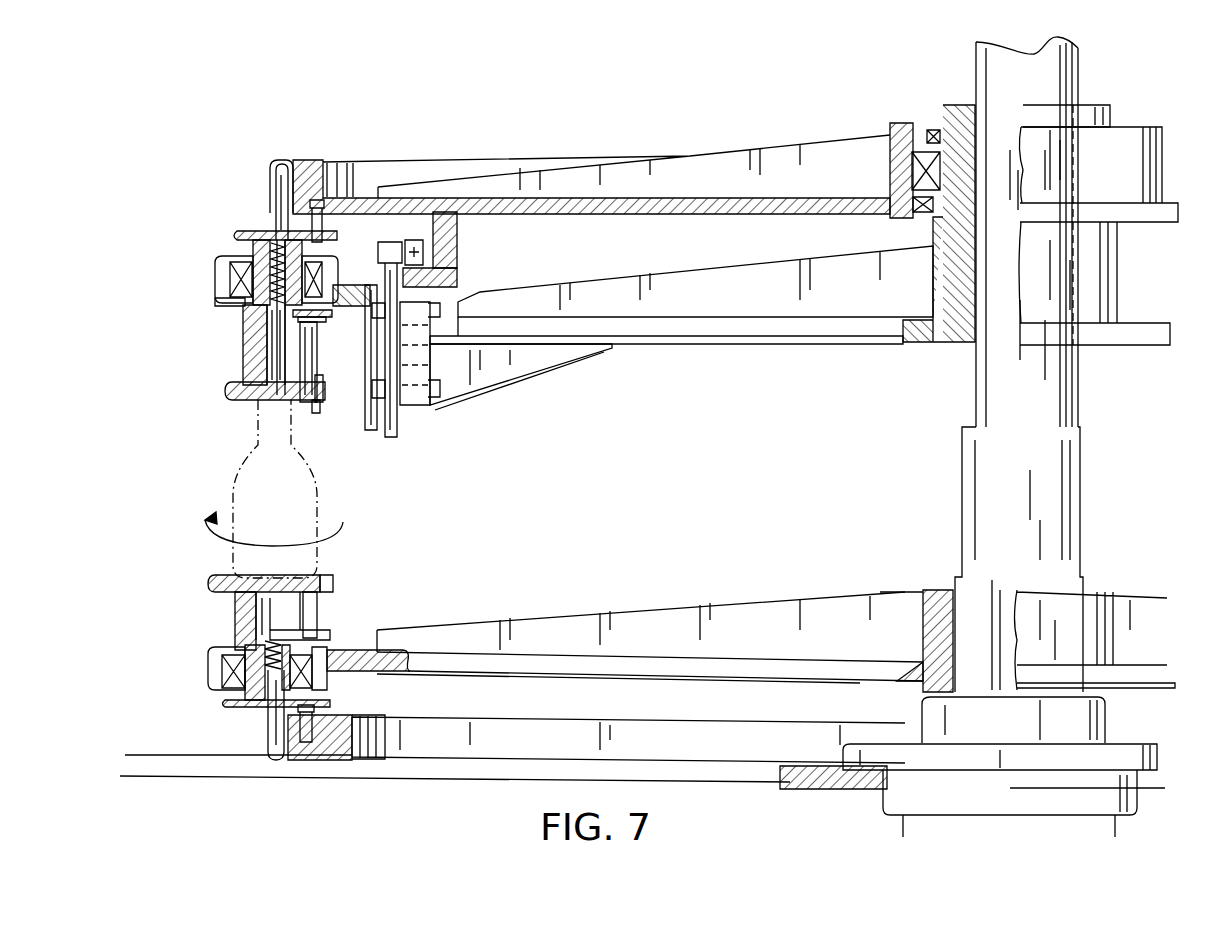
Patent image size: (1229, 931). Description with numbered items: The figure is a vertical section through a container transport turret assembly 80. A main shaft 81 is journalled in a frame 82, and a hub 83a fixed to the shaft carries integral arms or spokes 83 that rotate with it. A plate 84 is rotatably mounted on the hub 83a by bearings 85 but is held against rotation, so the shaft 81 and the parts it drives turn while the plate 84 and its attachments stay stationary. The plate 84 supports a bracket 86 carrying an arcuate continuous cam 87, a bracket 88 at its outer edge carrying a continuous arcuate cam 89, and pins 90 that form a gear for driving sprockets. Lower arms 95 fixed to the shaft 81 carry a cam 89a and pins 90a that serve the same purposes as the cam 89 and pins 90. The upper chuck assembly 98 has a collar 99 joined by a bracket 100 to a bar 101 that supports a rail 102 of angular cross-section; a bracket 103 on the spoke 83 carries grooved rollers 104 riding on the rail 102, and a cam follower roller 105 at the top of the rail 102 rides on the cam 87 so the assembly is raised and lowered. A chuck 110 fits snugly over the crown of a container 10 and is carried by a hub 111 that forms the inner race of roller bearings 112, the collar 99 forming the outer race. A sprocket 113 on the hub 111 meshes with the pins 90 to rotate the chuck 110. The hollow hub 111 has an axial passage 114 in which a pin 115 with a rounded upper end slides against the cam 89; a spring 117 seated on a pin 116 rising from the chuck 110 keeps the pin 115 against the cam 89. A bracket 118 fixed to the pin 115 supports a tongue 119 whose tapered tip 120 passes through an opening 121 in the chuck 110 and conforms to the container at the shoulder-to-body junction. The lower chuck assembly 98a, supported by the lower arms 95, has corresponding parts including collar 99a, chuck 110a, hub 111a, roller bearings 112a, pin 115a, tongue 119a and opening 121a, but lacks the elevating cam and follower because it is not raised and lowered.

The container 10 is at (212, 493).
The turret assembly 80 is at (1095, 100).
The main shaft 81 is at (1018, 405).
The frame 82 is at (1112, 745).
The arm 83 is at (846, 344).
The hub 83a is at (932, 230).
The plate 84 is at (722, 198).
The bearings 85 is at (892, 133).
The bracket 86 is at (458, 242).
The arcuate continuous cam 87 is at (424, 258).
The bracket 88 is at (318, 164).
The continuous arcuate cam 89 is at (308, 160).
The cam 89a is at (262, 752).
The pins 90 is at (324, 228).
The pins 90a is at (314, 716).
The lower arms 95 is at (622, 670).
The upper chuck assembly 98 is at (185, 338).
The lower chuck assembly 98a is at (185, 630).
The collar 99 is at (216, 272).
The collar 99a is at (216, 680).
The bracket 100 is at (352, 284).
The bar 101 is at (368, 422).
The rail 102 is at (394, 428).
The bracket 103 is at (473, 386).
The rollers 104 is at (405, 392).
The cam follower roller 105 is at (457, 282).
The chuck 110 is at (232, 400).
The chuck 110a is at (218, 578).
The hub 111 is at (245, 345).
The hub 111a is at (235, 618).
The roller bearings 112 is at (250, 258).
The roller bearings 112a is at (218, 663).
The sprocket 113 is at (240, 233).
The axial passage 114 is at (270, 300).
The pin 115 is at (275, 192).
The pin 115a is at (270, 730).
The pin 116 is at (278, 350).
The spring 117 is at (216, 300).
The bracket 118 is at (324, 323).
The tongue 119 is at (318, 355).
The tongue 119a is at (326, 608).
The tapered tip 120 is at (305, 420).
The opening 121 is at (325, 392).
The opening 121a is at (328, 582).